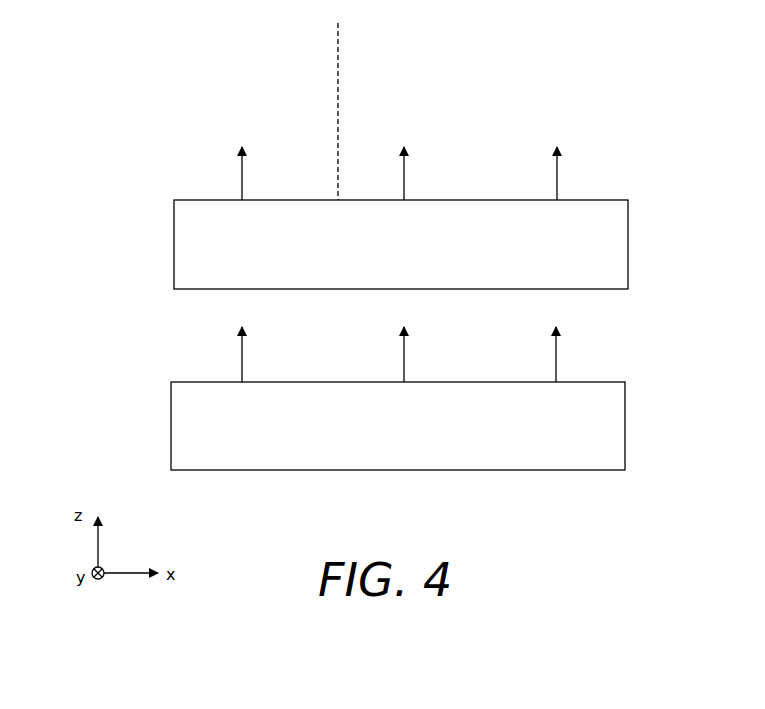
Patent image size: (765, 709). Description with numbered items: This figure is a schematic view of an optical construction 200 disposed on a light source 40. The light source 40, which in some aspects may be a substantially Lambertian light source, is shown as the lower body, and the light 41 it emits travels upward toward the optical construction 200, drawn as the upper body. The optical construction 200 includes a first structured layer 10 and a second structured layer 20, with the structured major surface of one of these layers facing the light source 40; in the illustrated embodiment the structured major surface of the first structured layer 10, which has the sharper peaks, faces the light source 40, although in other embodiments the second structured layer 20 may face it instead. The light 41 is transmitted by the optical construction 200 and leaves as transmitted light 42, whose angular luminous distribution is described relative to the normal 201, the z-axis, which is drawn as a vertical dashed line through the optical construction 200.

The first structured layer 10 is at (188, 290).
The second structured layer 20 is at (187, 198).
The optical construction 200 is at (226, 278).
The normal 201 is at (338, 50).
The light source 40 is at (222, 449).
The light emitted by the light source 41 is at (557, 355).
The transmitted light 42 is at (558, 173).